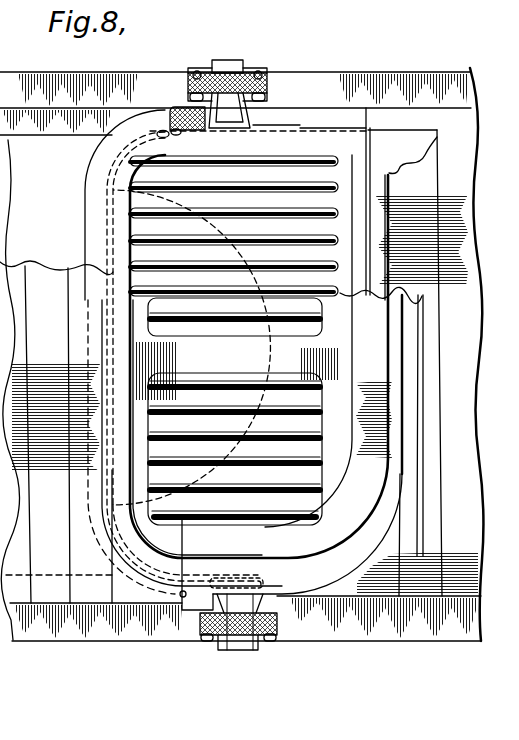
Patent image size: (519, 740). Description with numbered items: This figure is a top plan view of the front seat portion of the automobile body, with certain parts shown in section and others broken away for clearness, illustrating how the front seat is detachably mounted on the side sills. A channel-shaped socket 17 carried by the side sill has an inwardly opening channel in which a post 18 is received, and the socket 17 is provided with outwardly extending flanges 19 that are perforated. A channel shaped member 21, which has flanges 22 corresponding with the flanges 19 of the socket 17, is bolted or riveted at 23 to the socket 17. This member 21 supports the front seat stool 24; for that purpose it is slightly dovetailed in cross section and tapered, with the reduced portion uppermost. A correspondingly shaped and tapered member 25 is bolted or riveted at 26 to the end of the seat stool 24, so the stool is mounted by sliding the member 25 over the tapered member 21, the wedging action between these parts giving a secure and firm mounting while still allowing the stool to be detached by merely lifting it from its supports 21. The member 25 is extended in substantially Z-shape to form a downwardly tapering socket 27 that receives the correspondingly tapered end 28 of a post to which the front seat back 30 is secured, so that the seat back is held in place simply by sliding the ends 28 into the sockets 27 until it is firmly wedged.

The socket 17 is at (226, 60).
The post 18 is at (236, 62).
The outwardly extending flanges 19 is at (205, 72).
The channel shaped member 21 is at (236, 113).
The flanges 22 is at (190, 94).
The bolts or rivets 23 is at (200, 72).
The front seat stool 24 is at (117, 213).
The tapered member 25 is at (253, 125).
The bolts or rivets 26 is at (229, 133).
The downwardly tapering socket 27 is at (172, 107).
The tapered end 28 is at (169, 137).
The front seat back 30 is at (420, 348).